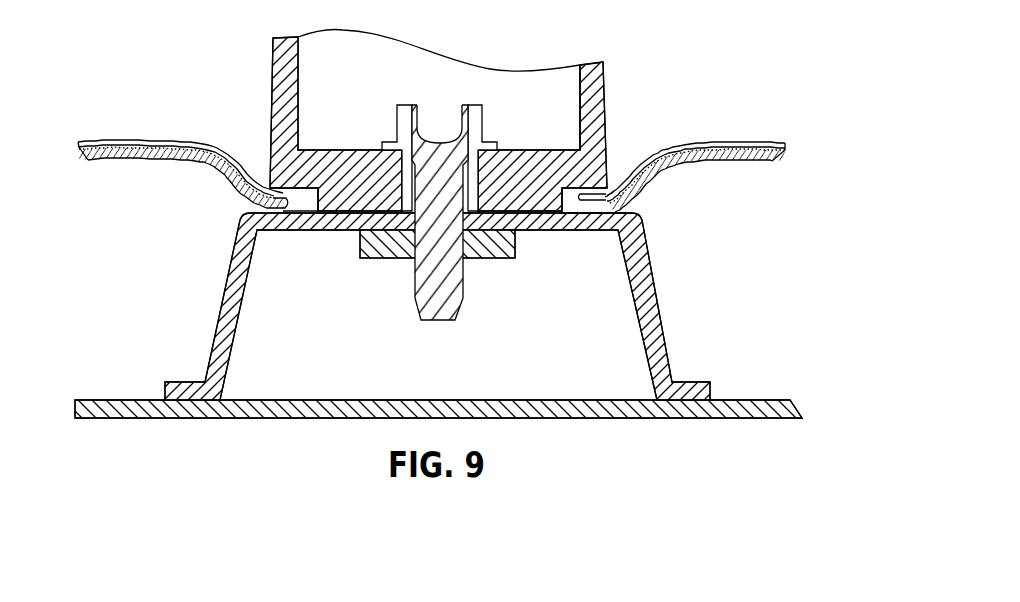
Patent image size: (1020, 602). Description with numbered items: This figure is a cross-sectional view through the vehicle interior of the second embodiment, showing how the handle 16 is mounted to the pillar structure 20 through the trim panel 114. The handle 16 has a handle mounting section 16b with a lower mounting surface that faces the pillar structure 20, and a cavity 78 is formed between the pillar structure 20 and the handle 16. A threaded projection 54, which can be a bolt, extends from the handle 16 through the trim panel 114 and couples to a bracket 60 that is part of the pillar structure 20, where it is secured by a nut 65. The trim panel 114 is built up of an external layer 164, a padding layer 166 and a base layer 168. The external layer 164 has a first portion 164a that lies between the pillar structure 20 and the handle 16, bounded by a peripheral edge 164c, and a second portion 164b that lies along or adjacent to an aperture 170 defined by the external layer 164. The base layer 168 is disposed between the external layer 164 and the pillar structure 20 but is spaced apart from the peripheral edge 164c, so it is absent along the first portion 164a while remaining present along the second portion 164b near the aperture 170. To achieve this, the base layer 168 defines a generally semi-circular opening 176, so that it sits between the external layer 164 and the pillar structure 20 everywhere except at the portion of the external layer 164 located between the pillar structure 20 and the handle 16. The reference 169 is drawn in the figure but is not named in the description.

The handle 16 is at (605, 90).
The handle mounting section 16b is at (607, 158).
The pillar structure 20 is at (258, 420).
The threaded projection 54 is at (417, 307).
The bracket 60 is at (660, 312).
The nut 65 is at (498, 258).
The cavity 78 is at (573, 212).
The trim panel 114 is at (123, 140).
The external layer 164 is at (434, 185).
The first portion 164a is at (587, 201).
The second portion 164b is at (286, 136).
The peripheral edge 164c is at (563, 190).
The padding layer 166 is at (80, 152).
The base layer 168 is at (105, 159).
The clearance recess 169 is at (560, 198).
The aperture 170 is at (295, 197).
The opening 176 is at (287, 203).